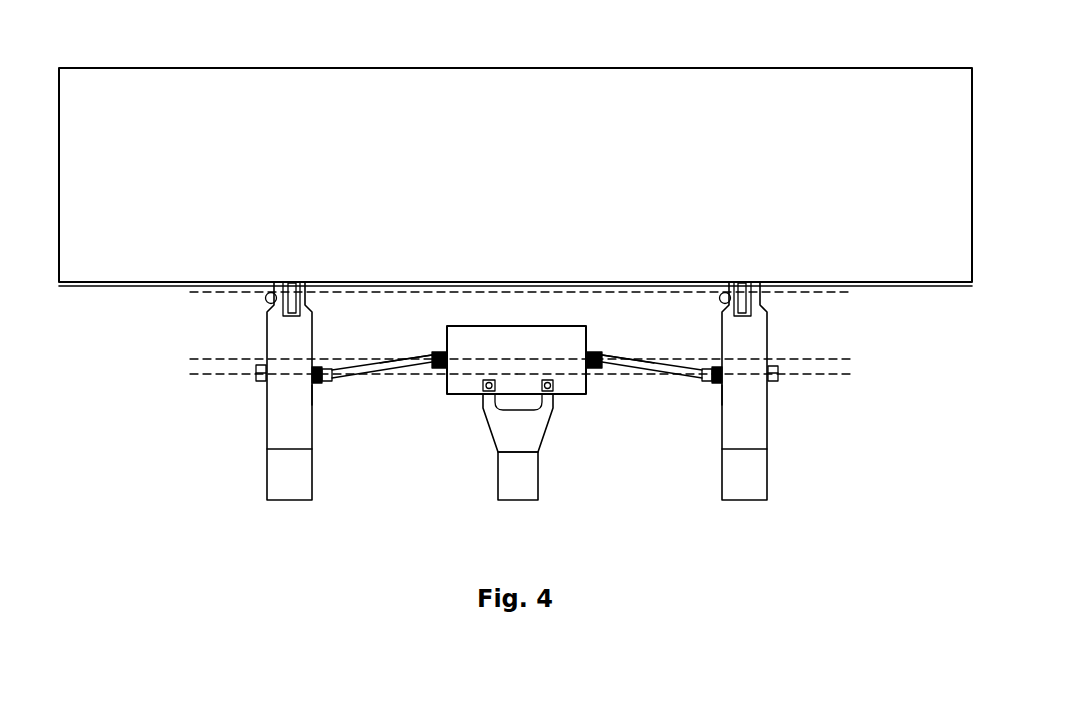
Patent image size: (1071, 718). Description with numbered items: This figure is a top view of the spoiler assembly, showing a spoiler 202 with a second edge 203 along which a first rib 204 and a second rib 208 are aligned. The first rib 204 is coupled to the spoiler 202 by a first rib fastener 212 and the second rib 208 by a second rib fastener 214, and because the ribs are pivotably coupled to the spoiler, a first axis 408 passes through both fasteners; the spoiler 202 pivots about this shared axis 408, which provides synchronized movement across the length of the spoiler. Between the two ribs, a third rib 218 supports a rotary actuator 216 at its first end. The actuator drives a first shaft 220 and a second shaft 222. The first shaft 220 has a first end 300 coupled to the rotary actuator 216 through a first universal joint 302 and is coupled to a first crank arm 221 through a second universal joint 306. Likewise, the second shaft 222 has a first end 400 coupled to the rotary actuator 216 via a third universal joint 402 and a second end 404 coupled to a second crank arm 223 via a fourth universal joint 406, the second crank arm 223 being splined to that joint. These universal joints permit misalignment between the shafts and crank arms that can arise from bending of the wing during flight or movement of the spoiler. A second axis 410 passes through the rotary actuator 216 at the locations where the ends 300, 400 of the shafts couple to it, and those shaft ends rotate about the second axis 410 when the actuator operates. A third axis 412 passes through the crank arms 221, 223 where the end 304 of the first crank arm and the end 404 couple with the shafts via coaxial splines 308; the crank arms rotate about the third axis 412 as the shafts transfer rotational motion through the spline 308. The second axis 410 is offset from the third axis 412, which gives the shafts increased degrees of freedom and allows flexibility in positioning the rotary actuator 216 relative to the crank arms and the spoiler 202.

The spoiler 202 is at (336, 68).
The second edge 203 is at (95, 287).
The first rib 204 is at (270, 432).
The second rib 208 is at (753, 428).
The first rib fastener 212 is at (296, 283).
The second rib fastener 214 is at (746, 283).
The rotary actuator 216 is at (538, 331).
The third rib 218 is at (497, 494).
The first shaft 220 is at (403, 352).
The first crank arm 221 is at (262, 366).
The second shaft 222 is at (633, 352).
The second crank arm 223 is at (775, 366).
The first end of the first shaft 300 is at (436, 377).
The first universal joint 302 is at (418, 318).
The end of the first crank arm 304 is at (328, 385).
The second universal joint 306 is at (318, 386).
The spline 308 is at (313, 405).
The first end of the second shaft 400 is at (596, 377).
The third universal joint 402 is at (631, 355).
The second end of the second shaft 404 is at (708, 385).
The fourth universal joint 406 is at (718, 386).
The first axis 408 is at (205, 293).
The second axis 410 is at (843, 359).
The third axis 412 is at (205, 375).